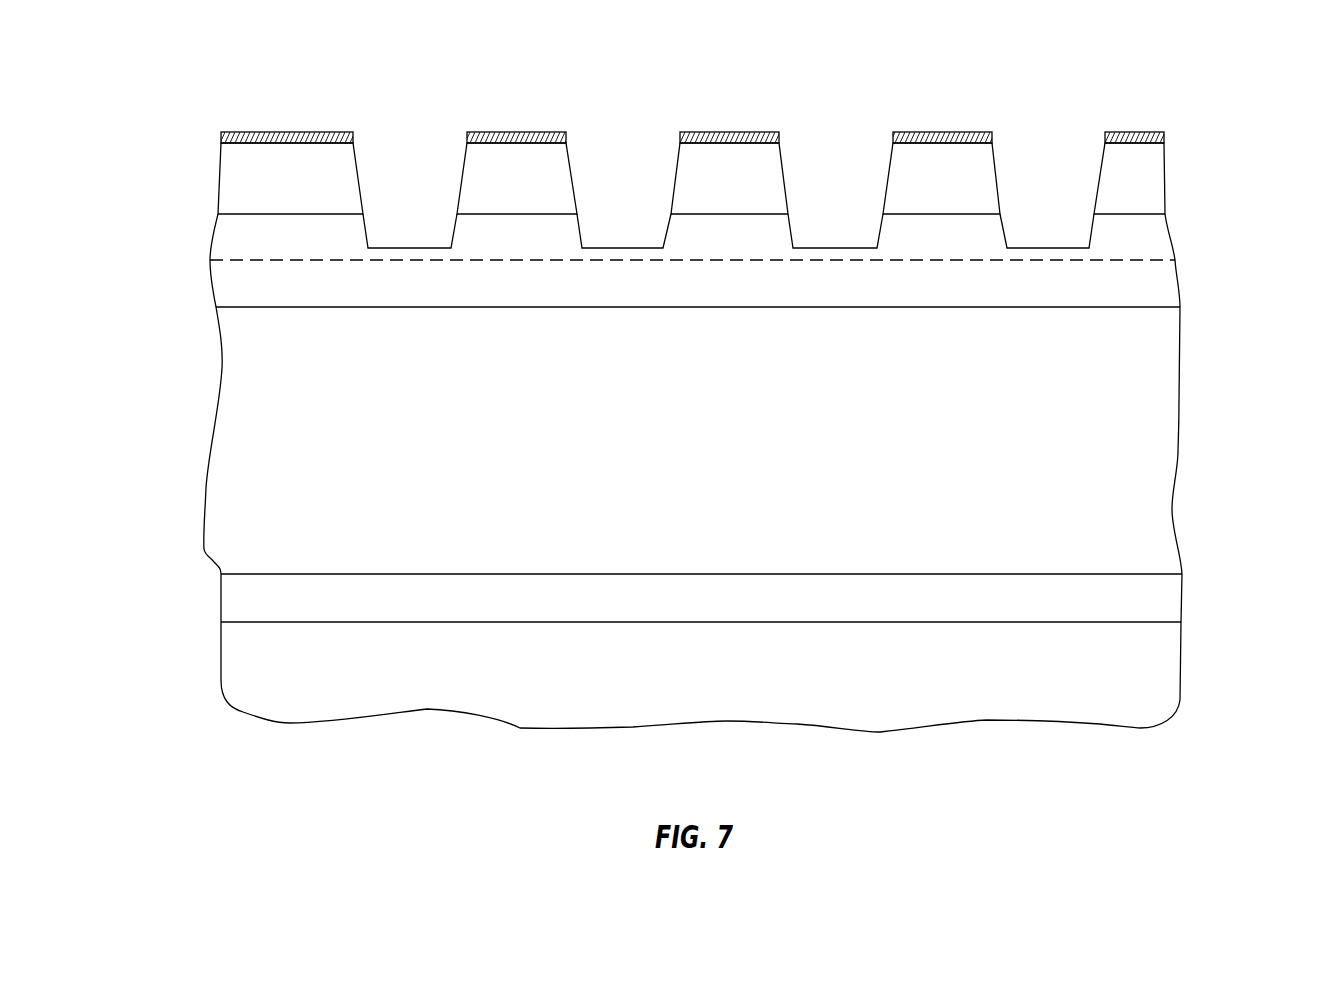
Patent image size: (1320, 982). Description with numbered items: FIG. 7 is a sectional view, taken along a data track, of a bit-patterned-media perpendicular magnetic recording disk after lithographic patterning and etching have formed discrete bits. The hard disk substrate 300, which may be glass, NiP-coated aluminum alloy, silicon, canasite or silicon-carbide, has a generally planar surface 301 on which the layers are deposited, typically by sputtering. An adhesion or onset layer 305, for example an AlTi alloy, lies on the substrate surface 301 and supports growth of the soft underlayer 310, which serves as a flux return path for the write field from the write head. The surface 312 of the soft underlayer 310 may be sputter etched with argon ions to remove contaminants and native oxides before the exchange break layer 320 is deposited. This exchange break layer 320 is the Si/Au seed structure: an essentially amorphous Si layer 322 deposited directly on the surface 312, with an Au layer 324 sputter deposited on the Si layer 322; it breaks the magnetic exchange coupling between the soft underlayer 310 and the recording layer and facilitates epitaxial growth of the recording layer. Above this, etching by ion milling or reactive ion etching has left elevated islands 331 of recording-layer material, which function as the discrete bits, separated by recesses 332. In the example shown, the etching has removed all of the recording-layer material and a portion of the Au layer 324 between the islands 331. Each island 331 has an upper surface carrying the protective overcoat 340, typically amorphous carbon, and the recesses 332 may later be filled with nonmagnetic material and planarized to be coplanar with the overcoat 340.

The hard disk substrate 300 is at (1172, 669).
The substrate surface 301 is at (1167, 625).
The onset layer 305 is at (1172, 599).
The soft underlayer 310 is at (1166, 466).
The surface of SUL 312 is at (1168, 306).
The exchange break layer 320 is at (203, 213).
The Si layer 322 is at (1172, 282).
The Au layer 324 is at (1157, 243).
The islands 331 is at (289, 158).
The recesses 332 is at (390, 157).
The protective overcoat 340 is at (1150, 130).